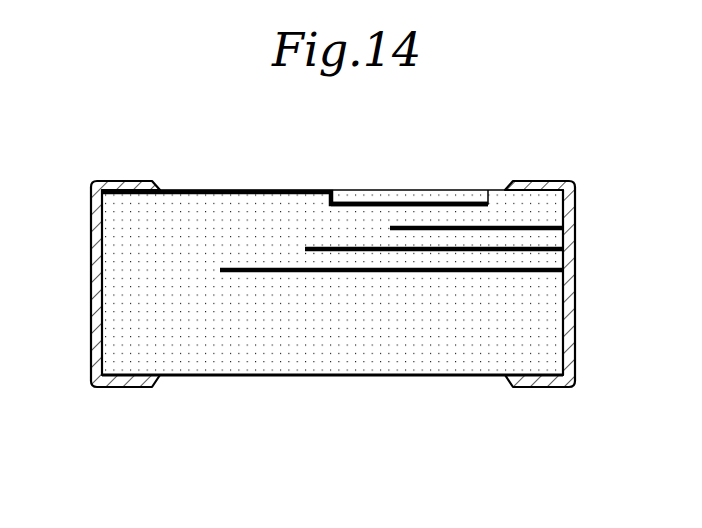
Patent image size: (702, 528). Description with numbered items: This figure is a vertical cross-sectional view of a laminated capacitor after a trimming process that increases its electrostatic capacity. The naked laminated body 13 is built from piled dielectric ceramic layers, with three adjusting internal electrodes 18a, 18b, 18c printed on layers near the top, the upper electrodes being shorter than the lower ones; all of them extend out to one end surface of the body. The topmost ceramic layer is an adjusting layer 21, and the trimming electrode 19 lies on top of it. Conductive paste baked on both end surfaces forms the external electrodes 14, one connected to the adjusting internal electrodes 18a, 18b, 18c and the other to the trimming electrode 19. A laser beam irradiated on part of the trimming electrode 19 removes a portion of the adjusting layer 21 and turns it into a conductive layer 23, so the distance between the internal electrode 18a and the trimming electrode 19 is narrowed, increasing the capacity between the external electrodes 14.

The naked laminated body 13 is at (392, 360).
The external electrode 14 is at (125, 382).
The adjusting internal electrode 18a is at (455, 220).
The adjusting internal electrode 18b is at (360, 252).
The adjusting internal electrode 18c is at (248, 273).
The trimming electrode 19 is at (318, 189).
The adjusting layer 21 is at (370, 215).
The conductive layer 23 is at (413, 203).